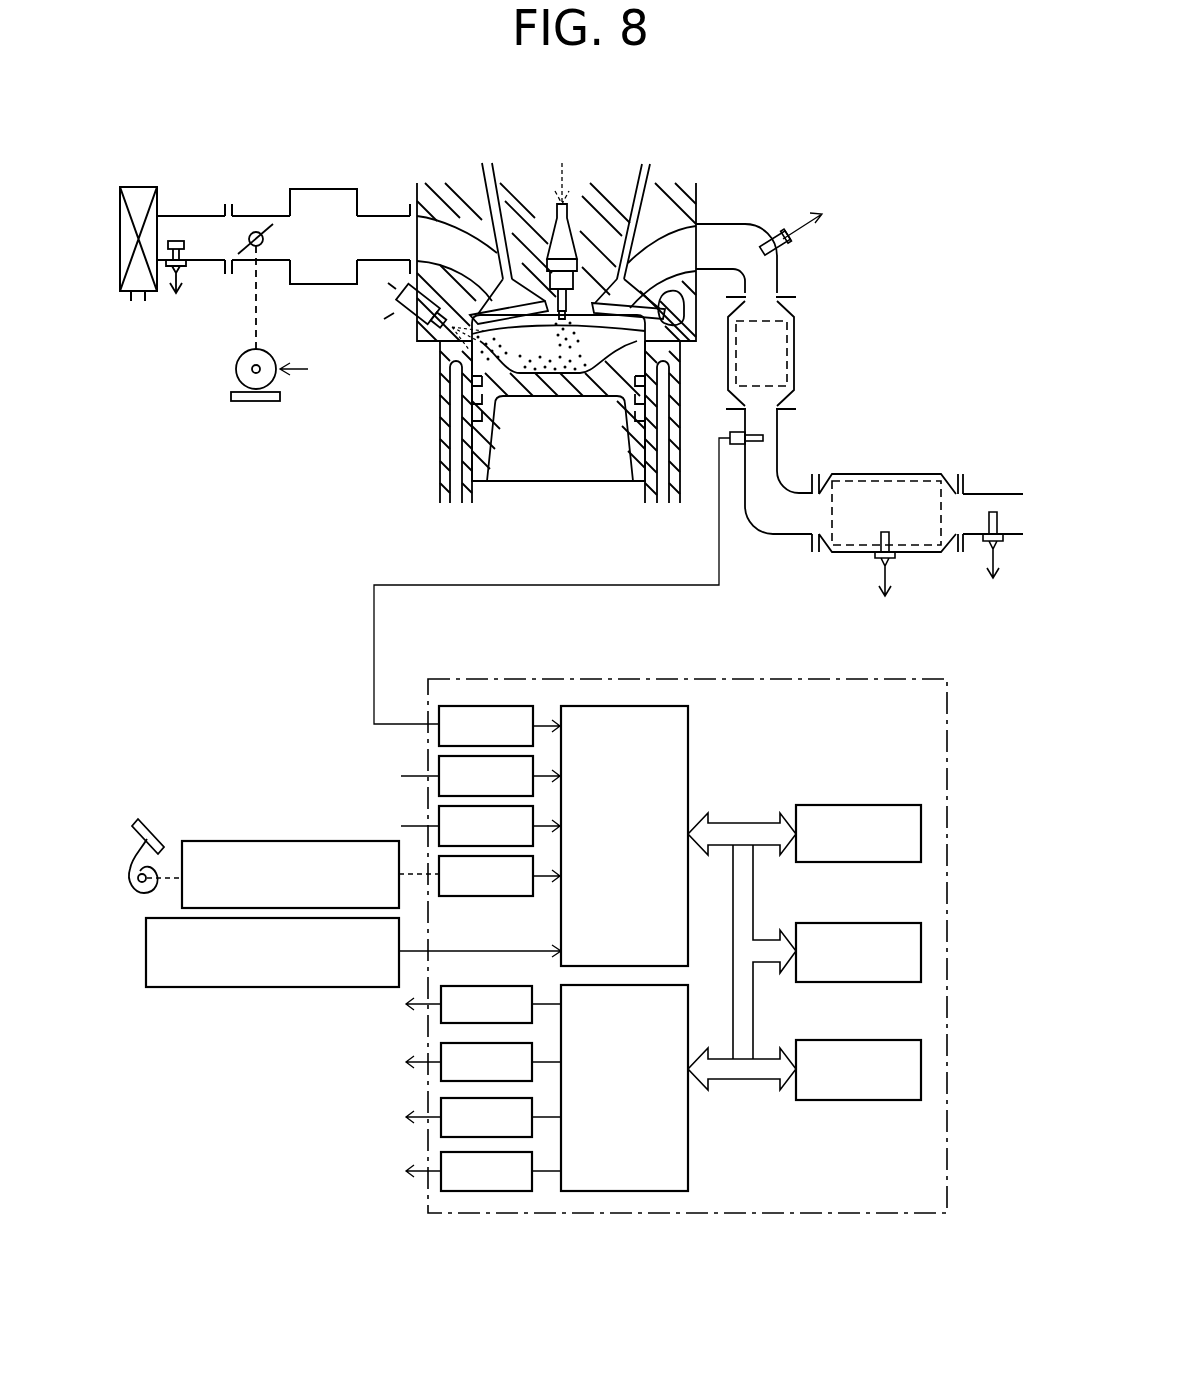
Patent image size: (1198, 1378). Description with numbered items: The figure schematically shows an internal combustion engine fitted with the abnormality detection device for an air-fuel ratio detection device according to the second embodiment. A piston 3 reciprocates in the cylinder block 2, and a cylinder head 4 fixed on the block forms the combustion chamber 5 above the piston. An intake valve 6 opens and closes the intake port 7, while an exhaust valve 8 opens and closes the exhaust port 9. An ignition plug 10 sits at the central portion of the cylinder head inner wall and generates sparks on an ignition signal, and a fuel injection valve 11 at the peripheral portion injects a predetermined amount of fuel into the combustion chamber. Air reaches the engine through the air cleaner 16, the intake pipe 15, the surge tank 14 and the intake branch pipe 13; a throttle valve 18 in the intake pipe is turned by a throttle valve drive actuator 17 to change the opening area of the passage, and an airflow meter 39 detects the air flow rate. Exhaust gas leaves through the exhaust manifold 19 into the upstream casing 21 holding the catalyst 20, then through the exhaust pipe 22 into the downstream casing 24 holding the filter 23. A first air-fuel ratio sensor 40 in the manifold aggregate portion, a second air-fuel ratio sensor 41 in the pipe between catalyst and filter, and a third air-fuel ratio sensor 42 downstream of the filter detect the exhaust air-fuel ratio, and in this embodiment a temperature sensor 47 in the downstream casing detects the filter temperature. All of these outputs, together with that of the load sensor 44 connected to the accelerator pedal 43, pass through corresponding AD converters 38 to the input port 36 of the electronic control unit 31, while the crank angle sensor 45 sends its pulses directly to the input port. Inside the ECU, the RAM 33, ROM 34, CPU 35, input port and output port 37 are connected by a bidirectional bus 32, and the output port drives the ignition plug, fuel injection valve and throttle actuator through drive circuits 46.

The cylinder block 2 is at (680, 425).
The piston 3 is at (495, 423).
The cylinder head 4 is at (672, 215).
The combustion chamber 5 is at (615, 330).
The intake valve 6 is at (500, 225).
The intake port 7 is at (447, 240).
The exhaust valve 8 is at (629, 198).
The exhaust port 9 is at (702, 242).
The ignition plug 10 is at (567, 228).
The fuel injection valve 11 is at (400, 296).
The intake branch pipe 13 is at (384, 230).
The surge tank 14 is at (323, 270).
The intake pipe 15 is at (210, 262).
The air cleaner 16 is at (135, 186).
The throttle valve drive actuator 17 is at (232, 372).
The throttle valve 18 is at (273, 228).
The exhaust manifold 19 is at (740, 214).
The catalyst 20 is at (795, 320).
The upstream casing 21 is at (794, 368).
The exhaust pipe 22 is at (779, 451).
The filter 23 is at (882, 482).
The downstream casing 24 is at (925, 472).
The electronic control unit 31 is at (948, 776).
The bidirectional bus 32 is at (745, 823).
The random access memory 33 is at (880, 804).
The read only memory 34 is at (882, 922).
The microprocessor 35 is at (868, 1039).
The input port 36 is at (690, 712).
The output port 37 is at (690, 1147).
The AD converter 38 is at (439, 861).
The airflow meter 39 is at (176, 238).
The first air-fuel ratio sensor 40 is at (784, 248).
The second air-fuel ratio sensor 41 is at (735, 446).
The third air-fuel ratio sensor 42 is at (1000, 542).
The accelerator pedal 43 is at (140, 824).
The load sensor 44 is at (265, 840).
The crank angle sensor 45 is at (280, 988).
The drive circuits 46 is at (441, 1160).
The temperature sensor 47 is at (896, 556).